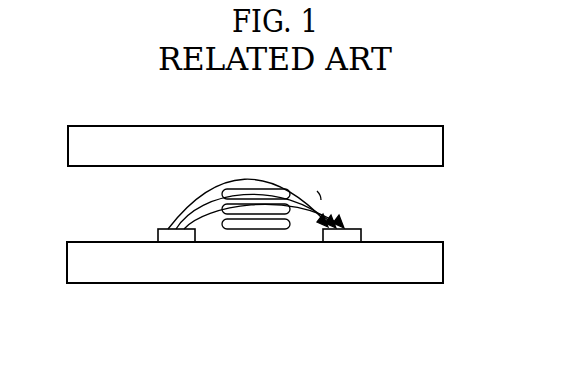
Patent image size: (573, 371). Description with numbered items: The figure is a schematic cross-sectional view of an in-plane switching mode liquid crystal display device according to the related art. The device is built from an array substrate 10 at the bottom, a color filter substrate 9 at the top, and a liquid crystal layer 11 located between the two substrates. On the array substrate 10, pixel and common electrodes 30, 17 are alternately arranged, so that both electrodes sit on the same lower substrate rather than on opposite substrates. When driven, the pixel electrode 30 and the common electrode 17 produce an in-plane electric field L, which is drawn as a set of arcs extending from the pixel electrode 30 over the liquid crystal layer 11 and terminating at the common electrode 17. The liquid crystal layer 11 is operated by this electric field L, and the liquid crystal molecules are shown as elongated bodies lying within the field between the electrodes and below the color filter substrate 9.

The color filter substrate 9 is at (463, 125).
The array substrate 10 is at (463, 241).
The liquid crystal layer 11 is at (463, 166).
The pixel electrode 30 is at (175, 236).
The common electrode 17 is at (347, 233).
The in-plane electric field L is at (307, 216).